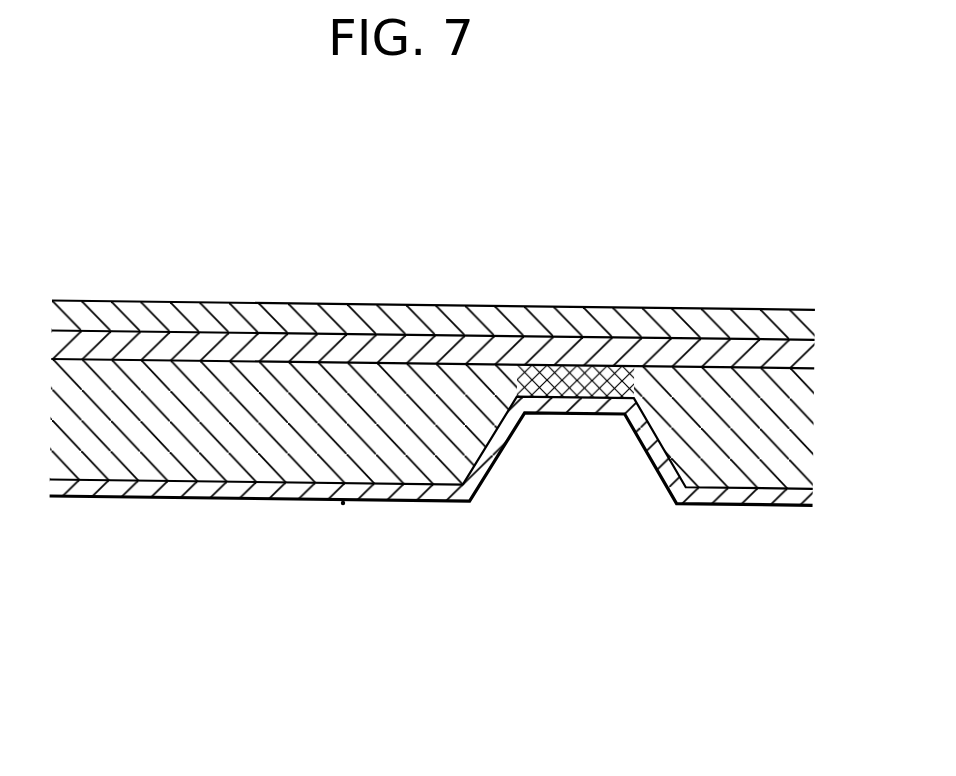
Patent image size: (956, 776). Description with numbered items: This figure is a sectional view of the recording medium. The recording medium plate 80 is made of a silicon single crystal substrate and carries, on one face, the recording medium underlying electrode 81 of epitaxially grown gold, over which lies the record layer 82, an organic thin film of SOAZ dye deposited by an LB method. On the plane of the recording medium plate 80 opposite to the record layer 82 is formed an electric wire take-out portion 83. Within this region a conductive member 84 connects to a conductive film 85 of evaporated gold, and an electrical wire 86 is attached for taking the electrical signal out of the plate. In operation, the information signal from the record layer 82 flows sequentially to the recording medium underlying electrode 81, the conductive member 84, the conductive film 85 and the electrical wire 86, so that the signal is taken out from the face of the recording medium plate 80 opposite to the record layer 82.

The recording medium plate 80 is at (727, 450).
The recording medium underlying electrode 81 is at (628, 357).
The record layer 82 is at (429, 315).
The electric wire take-out portion 83 is at (573, 425).
The conductive member 84 is at (542, 384).
The conductive film 85 is at (432, 495).
The electrical wire 86 is at (343, 505).